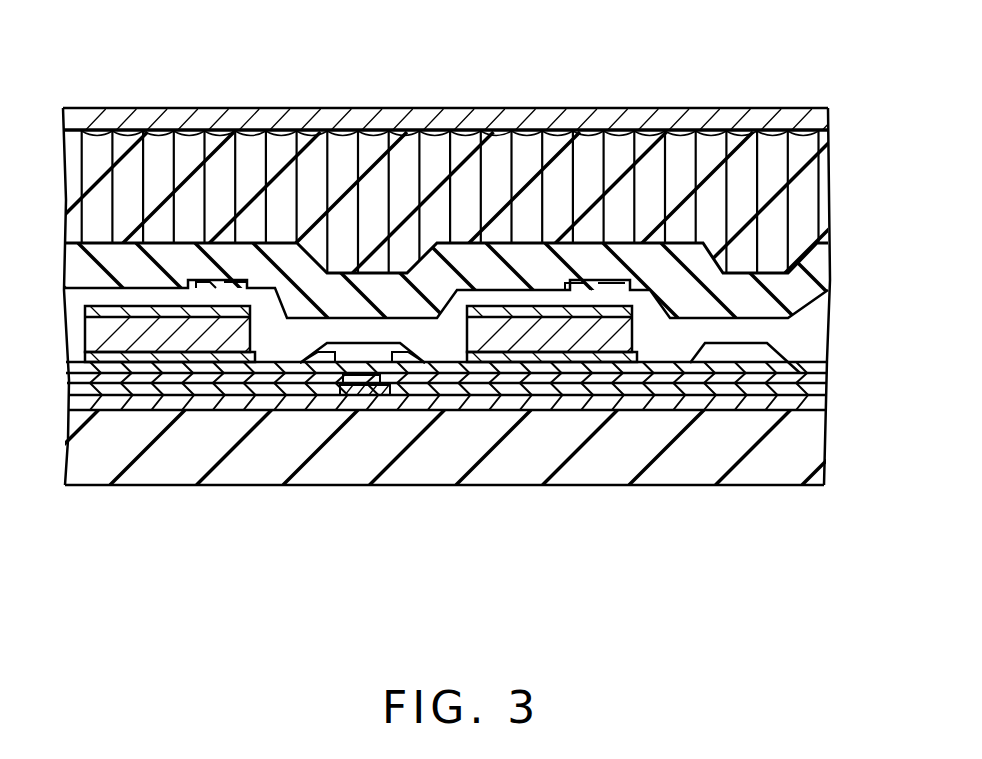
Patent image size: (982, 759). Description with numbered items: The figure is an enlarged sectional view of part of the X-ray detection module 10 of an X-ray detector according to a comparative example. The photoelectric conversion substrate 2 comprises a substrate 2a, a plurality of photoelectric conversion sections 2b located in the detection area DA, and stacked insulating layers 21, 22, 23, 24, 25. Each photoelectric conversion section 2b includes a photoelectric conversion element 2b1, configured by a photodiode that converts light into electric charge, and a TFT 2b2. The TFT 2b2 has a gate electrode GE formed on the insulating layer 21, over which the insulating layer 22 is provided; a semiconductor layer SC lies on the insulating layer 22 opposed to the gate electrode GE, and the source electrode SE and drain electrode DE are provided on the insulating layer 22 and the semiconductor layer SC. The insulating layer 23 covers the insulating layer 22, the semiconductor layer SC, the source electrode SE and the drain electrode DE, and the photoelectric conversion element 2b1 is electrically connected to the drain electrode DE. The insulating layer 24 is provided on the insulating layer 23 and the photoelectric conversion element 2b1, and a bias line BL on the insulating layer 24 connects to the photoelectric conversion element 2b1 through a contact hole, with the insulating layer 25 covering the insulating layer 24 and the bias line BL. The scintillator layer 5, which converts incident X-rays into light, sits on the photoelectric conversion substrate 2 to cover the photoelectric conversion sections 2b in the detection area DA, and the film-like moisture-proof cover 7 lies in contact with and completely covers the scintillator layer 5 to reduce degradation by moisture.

The detection area DA is at (831, 108).
The X-ray detection module 10 is at (850, 100).
The moisture-proof cover 7 is at (475, 112).
The scintillator layer 5 is at (836, 169).
The insulating layer 25 is at (820, 268).
The bias line BL is at (200, 276).
The photoelectric conversion substrate 2 is at (52, 242).
The insulating layer 24 is at (821, 352).
The insulating layer 23 is at (819, 378).
The insulating layer 22 is at (824, 390).
The insulating layer 21 is at (826, 402).
The substrate 2a is at (817, 446).
The photoelectric conversion element 2b1 is at (167, 346).
The TFT 2b2 is at (529, 467).
The photoelectric conversion section 2b is at (742, 537).
The drain electrode DE is at (317, 380).
The gate electrode GE is at (347, 378).
The semiconductor layer SC is at (368, 377).
The source electrode SE is at (425, 449).